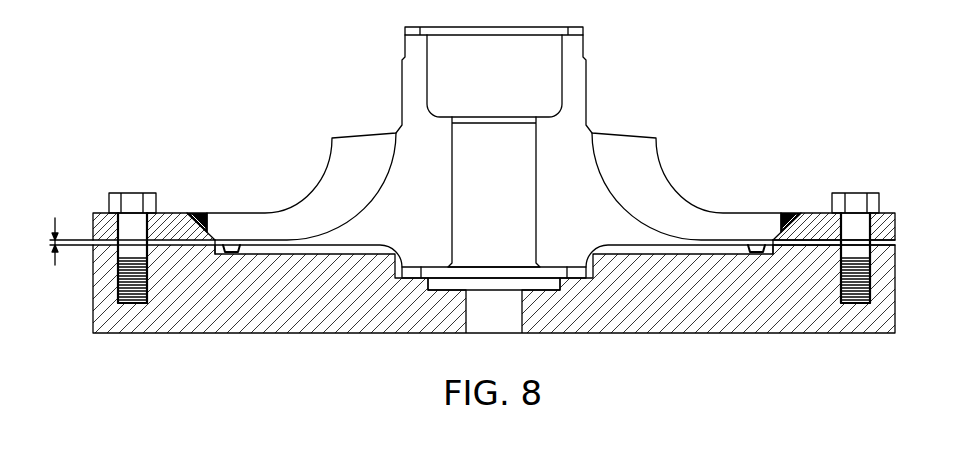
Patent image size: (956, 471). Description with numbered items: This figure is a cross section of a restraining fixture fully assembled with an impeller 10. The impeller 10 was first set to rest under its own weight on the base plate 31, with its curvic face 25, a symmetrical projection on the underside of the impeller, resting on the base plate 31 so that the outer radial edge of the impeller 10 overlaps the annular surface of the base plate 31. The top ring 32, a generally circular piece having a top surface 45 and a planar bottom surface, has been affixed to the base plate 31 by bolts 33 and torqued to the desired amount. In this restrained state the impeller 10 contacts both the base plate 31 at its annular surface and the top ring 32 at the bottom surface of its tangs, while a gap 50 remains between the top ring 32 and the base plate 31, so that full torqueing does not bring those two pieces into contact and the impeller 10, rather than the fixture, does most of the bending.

The impeller 10 is at (405, 45).
The curvic face 25 is at (578, 272).
The base plate 31 is at (152, 333).
The top ring 32 is at (99, 221).
The bolts 33 is at (132, 193).
The top surface 45 is at (890, 242).
The gap 50 is at (55, 267).